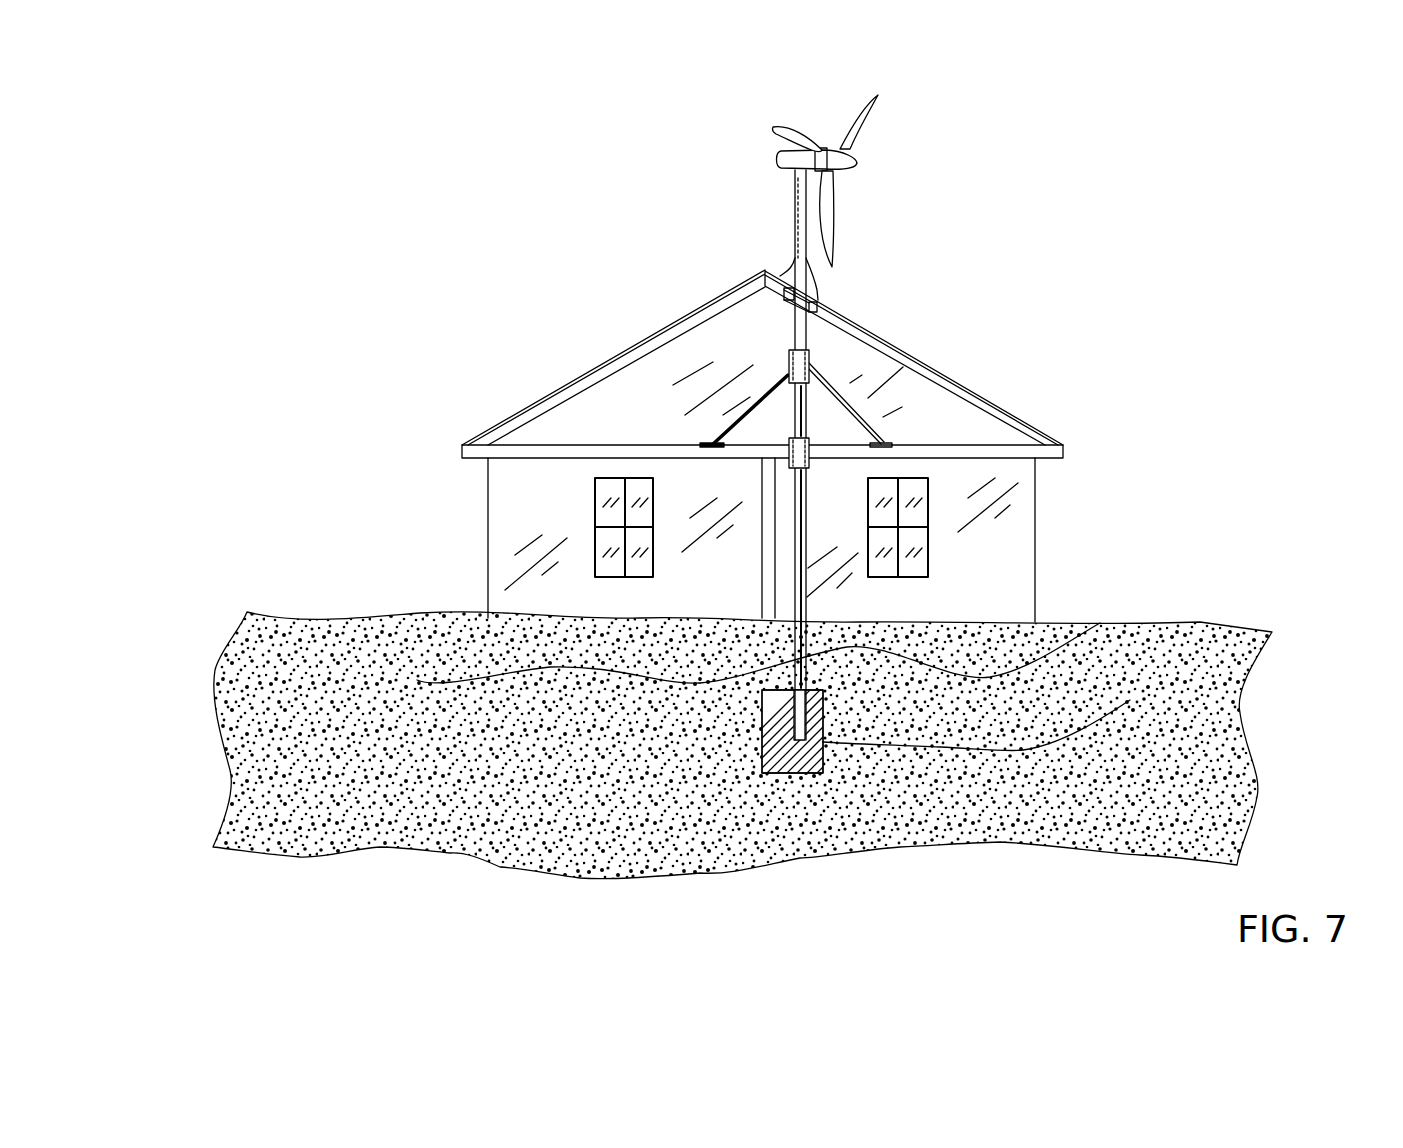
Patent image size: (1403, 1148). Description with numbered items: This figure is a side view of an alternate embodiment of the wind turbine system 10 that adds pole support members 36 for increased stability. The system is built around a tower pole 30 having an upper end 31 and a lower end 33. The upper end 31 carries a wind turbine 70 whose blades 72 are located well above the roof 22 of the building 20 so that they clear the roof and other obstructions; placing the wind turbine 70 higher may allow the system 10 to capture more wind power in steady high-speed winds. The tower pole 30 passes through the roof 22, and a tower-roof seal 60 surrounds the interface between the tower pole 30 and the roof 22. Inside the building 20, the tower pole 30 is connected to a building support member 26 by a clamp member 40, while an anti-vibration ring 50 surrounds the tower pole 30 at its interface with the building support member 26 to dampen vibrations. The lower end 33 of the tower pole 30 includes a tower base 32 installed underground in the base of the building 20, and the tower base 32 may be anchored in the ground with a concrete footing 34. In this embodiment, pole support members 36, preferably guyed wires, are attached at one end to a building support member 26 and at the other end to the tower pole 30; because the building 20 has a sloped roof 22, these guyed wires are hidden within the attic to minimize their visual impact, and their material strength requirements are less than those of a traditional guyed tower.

The wind turbine system 10 is at (1106, 197).
The building 20 is at (871, 446).
The roof 22 is at (989, 401).
The building support member 26 is at (1040, 456).
The tower pole 30 is at (720, 432).
The upper end 31 is at (800, 207).
The tower base 32 is at (1100, 623).
The lower end 33 is at (417, 680).
The concrete footing 34 is at (1130, 700).
The pole support member 36 is at (847, 405).
The clamp member 40 is at (765, 293).
The anti-vibration ring 50 is at (792, 320).
The tower-roof seal 60 is at (803, 282).
The wind turbine 70 is at (897, 175).
The blades 72 is at (873, 113).